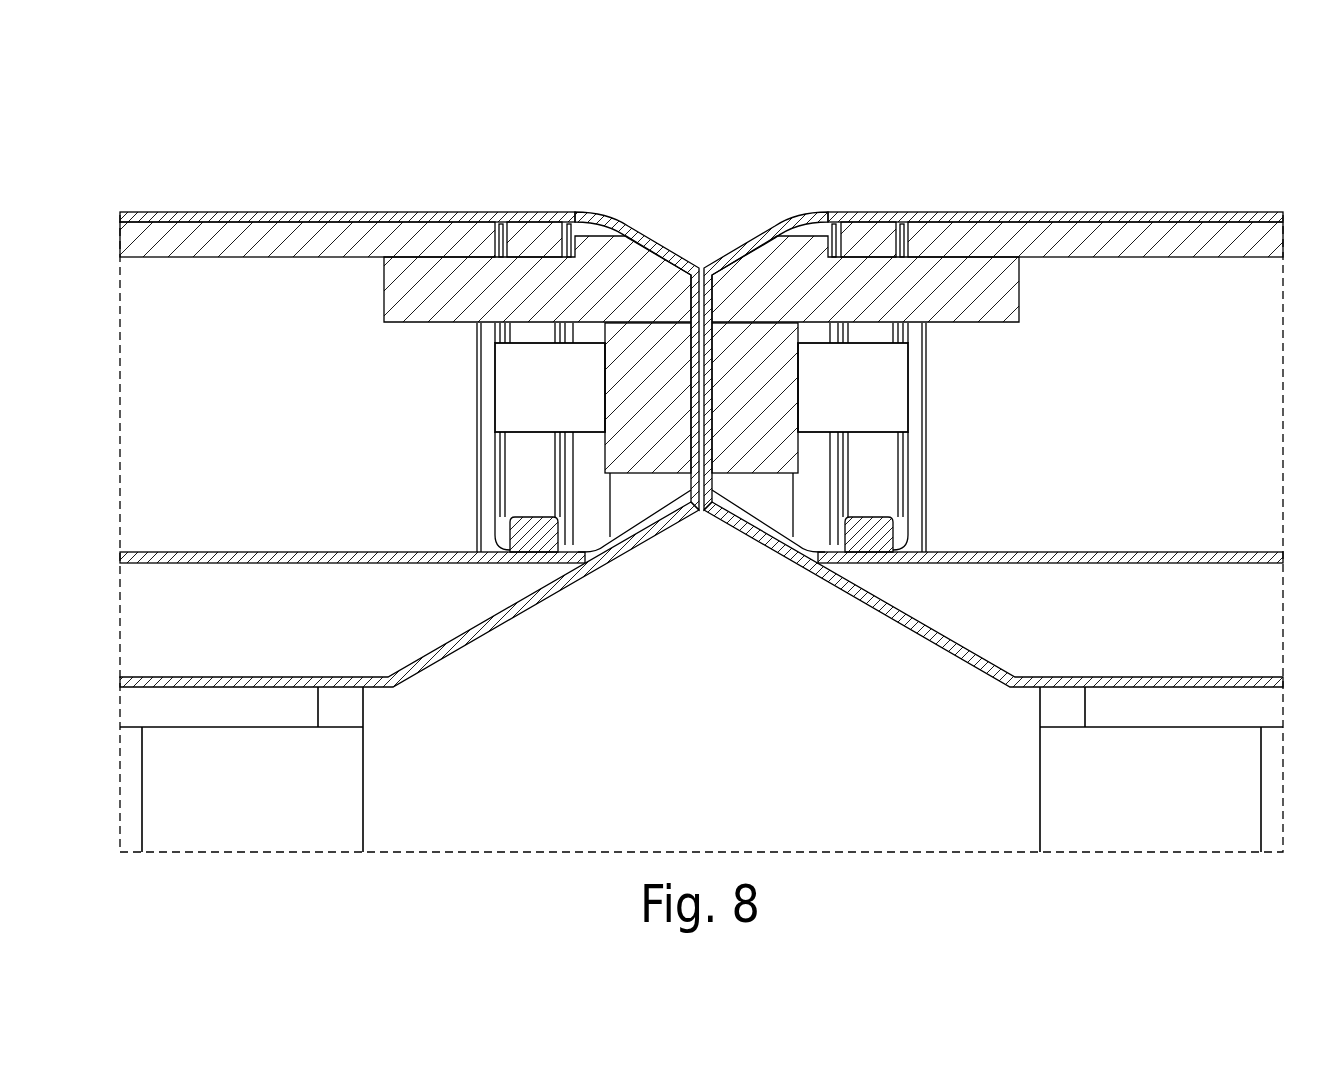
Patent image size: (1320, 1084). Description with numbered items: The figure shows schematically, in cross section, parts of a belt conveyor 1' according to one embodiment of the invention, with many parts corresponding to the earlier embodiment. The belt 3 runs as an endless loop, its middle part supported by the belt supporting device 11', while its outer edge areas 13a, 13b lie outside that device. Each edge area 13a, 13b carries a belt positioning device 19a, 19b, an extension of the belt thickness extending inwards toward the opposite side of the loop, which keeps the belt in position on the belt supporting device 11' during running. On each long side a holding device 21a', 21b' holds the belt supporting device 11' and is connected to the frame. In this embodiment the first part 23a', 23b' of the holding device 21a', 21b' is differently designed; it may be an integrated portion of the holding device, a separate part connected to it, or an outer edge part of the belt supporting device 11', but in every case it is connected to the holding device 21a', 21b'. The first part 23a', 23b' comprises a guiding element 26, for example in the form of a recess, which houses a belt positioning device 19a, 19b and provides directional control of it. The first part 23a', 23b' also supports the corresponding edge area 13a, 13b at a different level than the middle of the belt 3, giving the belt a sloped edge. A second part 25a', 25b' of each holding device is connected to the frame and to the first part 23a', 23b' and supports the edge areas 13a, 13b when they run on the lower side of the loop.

The belt conveyor 1' is at (701, 460).
The belt 3 is at (447, 210).
The belt supporting device 11' is at (1095, 187).
The edge area of the belt 13a is at (800, 213).
The edge area of the belt 13b is at (602, 212).
The belt positioning device 19a is at (867, 222).
The belt positioning device 19b is at (510, 221).
The holding device 21a' is at (761, 569).
The holding device 21b' is at (634, 563).
The first part of the holding device 23a' is at (865, 233).
The first part of the holding device 23b' is at (542, 233).
The second part of the holding device 25a' is at (993, 597).
The second part of the holding device 25b' is at (409, 597).
The guiding element 26 is at (562, 222).